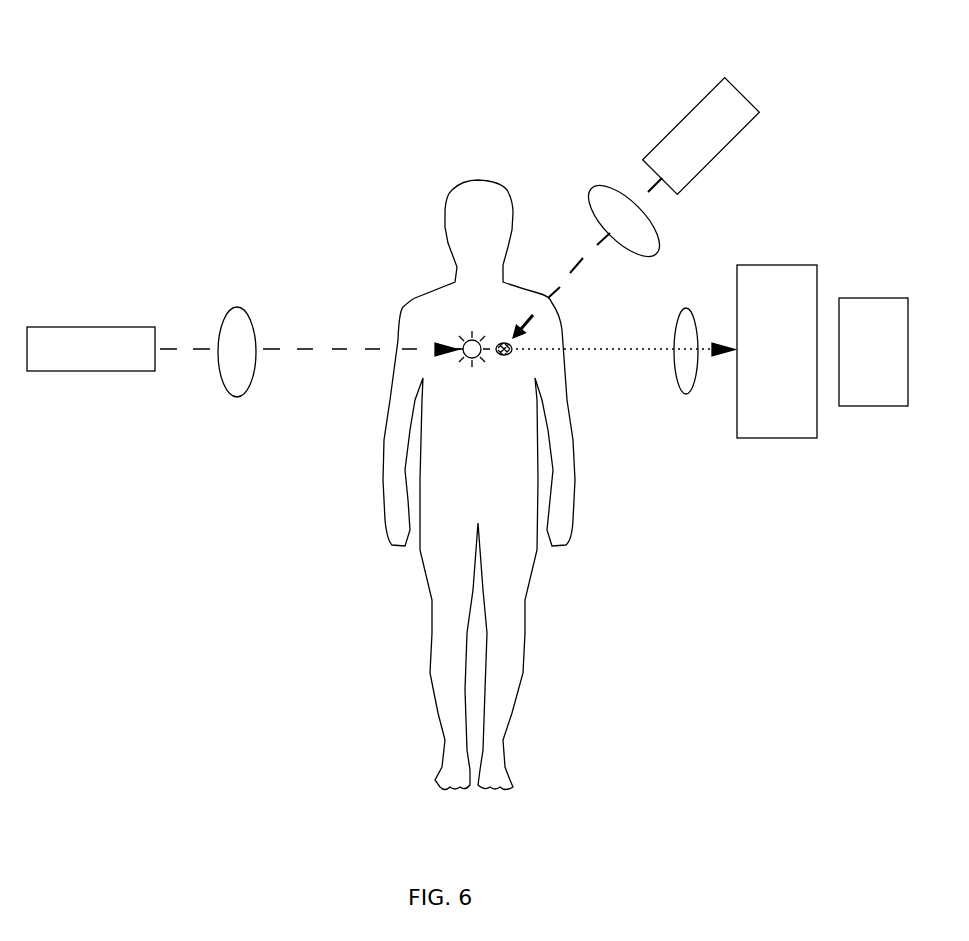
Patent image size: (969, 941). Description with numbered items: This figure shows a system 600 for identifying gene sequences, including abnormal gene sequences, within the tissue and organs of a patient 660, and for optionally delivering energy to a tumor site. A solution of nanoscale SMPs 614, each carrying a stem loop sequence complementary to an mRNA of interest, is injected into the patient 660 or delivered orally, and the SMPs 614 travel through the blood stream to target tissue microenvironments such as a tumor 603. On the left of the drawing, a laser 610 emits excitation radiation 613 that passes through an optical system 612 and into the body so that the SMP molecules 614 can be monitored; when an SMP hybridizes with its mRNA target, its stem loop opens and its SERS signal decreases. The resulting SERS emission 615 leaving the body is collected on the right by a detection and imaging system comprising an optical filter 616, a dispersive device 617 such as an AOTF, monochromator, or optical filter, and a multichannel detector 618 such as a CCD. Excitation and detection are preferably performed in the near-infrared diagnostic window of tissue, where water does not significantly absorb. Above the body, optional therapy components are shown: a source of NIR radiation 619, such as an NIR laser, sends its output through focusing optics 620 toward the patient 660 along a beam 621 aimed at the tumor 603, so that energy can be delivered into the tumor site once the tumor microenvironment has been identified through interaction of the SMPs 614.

The system 600 is at (264, 65).
The tumor 603 is at (515, 348).
The laser 610 is at (88, 327).
The optical system 612 is at (237, 307).
The excitation radiation 613 is at (332, 348).
The SMP 614 is at (465, 333).
The SERS emission 615 is at (635, 352).
The optical filter 616 is at (686, 395).
The dispersive device 617 is at (775, 440).
The multichannel detector 618 is at (872, 407).
The source of NIR radiation 619 is at (683, 120).
The focusing optics 620 is at (623, 193).
The second light beam 621 is at (570, 273).
The patient 660 is at (452, 195).